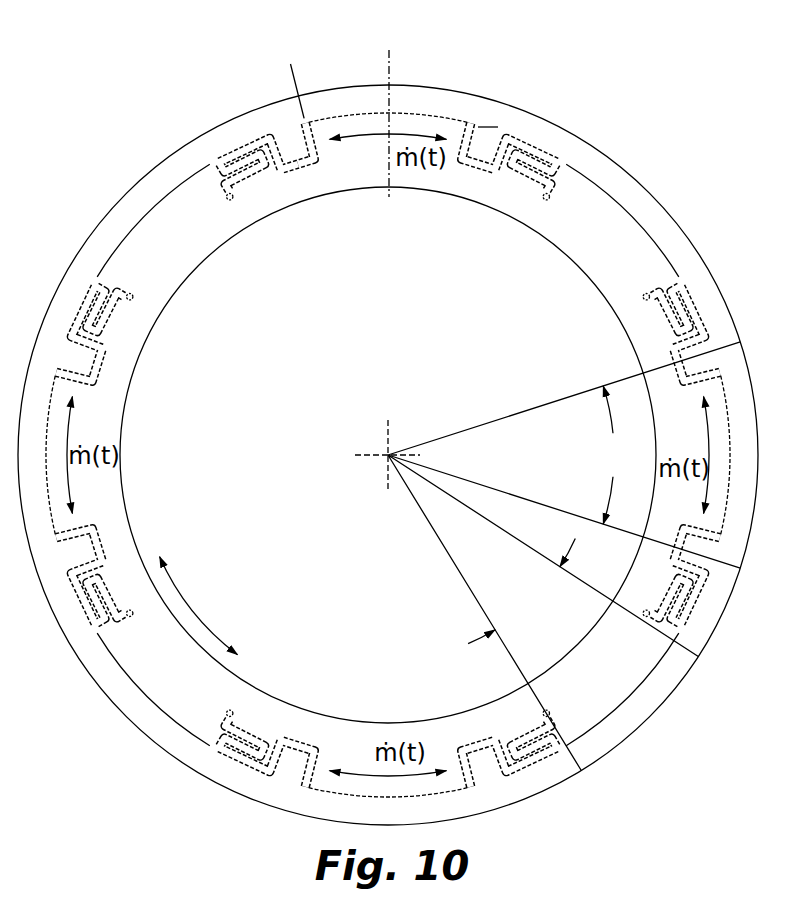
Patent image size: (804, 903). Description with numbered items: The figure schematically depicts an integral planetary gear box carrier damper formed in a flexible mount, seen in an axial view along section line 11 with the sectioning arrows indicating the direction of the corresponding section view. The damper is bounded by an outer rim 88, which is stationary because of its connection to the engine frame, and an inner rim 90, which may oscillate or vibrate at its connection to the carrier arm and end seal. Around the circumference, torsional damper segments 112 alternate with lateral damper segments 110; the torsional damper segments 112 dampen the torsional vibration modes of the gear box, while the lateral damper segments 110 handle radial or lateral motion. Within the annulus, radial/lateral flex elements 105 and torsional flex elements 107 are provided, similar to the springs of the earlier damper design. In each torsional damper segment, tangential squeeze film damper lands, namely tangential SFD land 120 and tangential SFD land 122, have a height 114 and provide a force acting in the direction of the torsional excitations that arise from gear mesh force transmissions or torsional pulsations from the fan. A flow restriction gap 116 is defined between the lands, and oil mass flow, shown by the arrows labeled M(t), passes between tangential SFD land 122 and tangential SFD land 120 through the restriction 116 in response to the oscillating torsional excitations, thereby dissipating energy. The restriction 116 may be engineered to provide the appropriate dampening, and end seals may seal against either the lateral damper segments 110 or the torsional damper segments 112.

The section line 11- 11 is at (325, 17).
The outer rim 88 is at (143, 196).
The inner rim 90 is at (105, 487).
The radial/lateral flex element 105 is at (246, 192).
The torsional flex element 107 is at (278, 175).
The lateral damper segment 110 is at (543, 613).
The torsional damper segment 112 is at (564, 455).
The height 114 is at (463, 197).
The flow restriction gap 116 is at (393, 112).
The tangential SFD land 120 is at (495, 147).
The tangential SFD land 122 is at (325, 68).